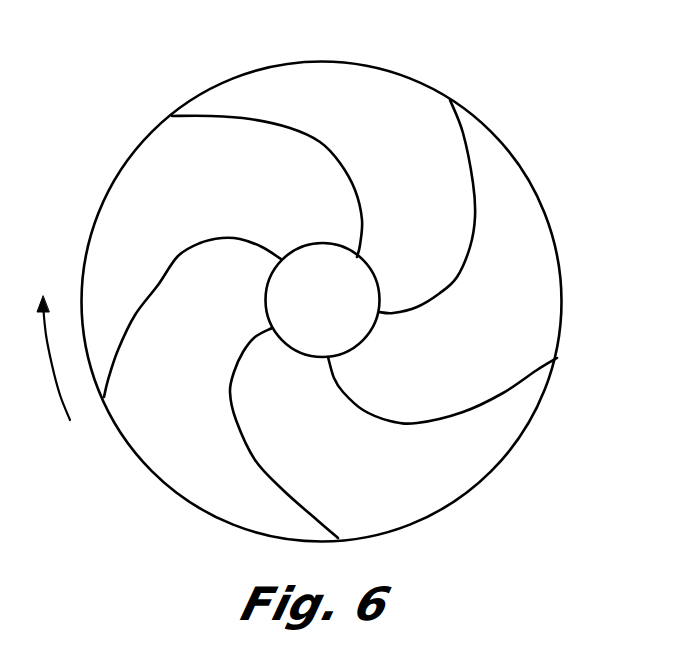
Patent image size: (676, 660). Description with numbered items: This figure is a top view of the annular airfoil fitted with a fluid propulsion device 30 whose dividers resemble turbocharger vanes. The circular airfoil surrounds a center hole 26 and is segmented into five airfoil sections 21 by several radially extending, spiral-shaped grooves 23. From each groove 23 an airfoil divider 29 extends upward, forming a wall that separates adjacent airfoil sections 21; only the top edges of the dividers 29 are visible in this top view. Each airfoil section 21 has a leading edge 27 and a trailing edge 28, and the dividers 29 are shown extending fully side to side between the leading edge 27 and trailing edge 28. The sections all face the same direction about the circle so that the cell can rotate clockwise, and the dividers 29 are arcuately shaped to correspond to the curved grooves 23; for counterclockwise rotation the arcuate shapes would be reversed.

The airfoil section 21 is at (421, 100).
The groove 23 is at (305, 136).
The center hole 26 is at (330, 311).
The leading edge 27 is at (305, 232).
The trailing edge 28 is at (283, 68).
The airfoil divider 29 is at (148, 288).
The fluid propulsion device 30 is at (150, 112).